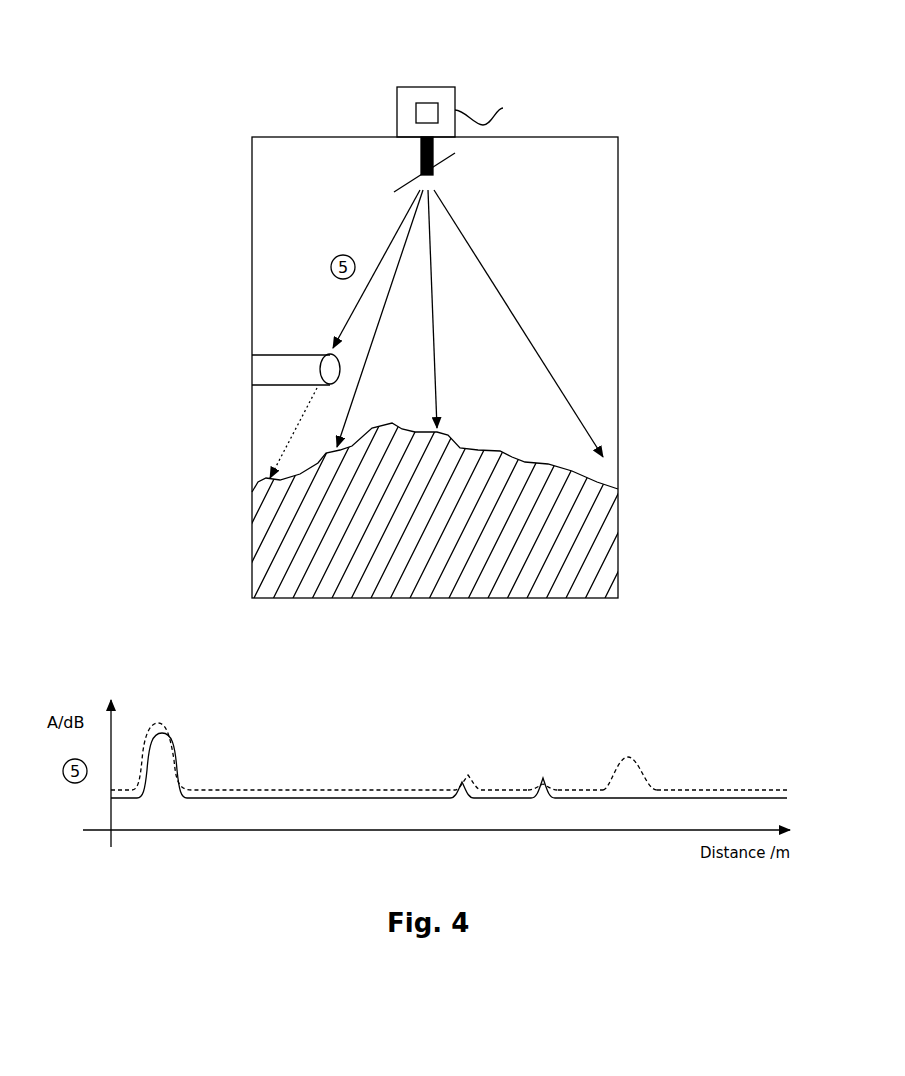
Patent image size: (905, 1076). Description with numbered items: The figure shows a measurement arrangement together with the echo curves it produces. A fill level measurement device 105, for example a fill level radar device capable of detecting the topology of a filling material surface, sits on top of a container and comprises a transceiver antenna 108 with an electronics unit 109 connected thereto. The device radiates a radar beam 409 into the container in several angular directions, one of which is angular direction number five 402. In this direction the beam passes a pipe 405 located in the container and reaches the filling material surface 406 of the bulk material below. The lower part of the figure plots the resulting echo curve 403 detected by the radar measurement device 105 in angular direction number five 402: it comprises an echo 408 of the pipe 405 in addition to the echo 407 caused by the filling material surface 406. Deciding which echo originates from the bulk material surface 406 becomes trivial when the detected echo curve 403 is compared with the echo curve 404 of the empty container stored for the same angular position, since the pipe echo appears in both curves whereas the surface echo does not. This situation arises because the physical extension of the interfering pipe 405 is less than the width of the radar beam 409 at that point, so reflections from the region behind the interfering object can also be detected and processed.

The fill level measurement device 105 is at (440, 87).
The electronics unit 109 is at (413, 113).
The transceiver antenna 108 is at (442, 162).
The angular direction no. 5 402 is at (378, 246).
The radar beam 409 is at (343, 330).
The pipe 405 is at (278, 353).
The filling material surface 406 is at (262, 476).
The echo of the pipe 408 is at (455, 778).
The echo curve 403 is at (543, 780).
The echo caused by the filling material surface 407 is at (533, 787).
The echo curve of the empty container 404 is at (635, 760).